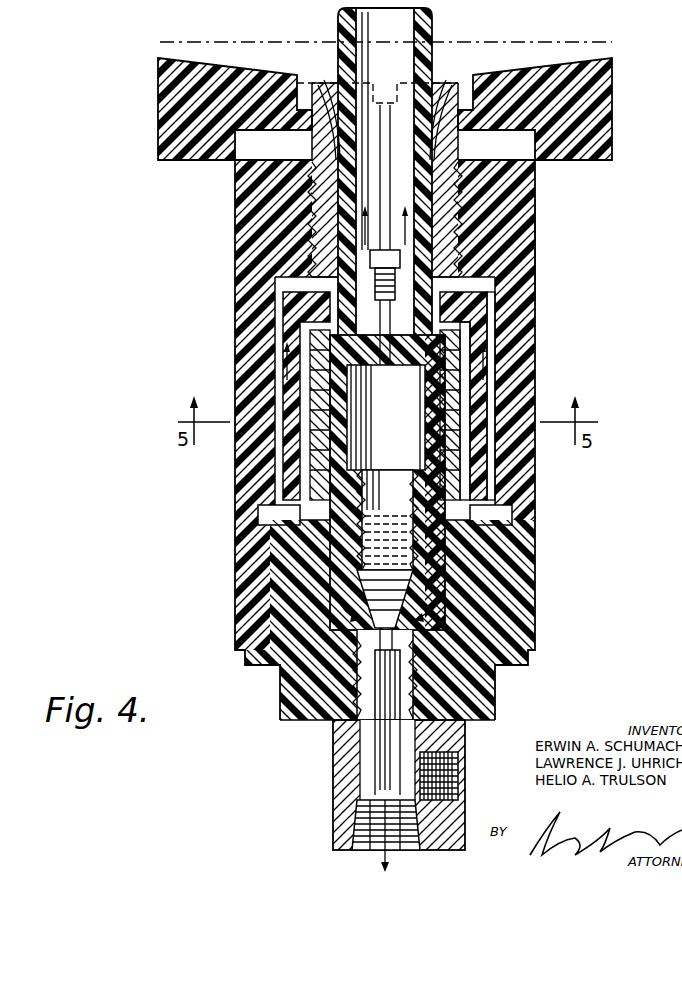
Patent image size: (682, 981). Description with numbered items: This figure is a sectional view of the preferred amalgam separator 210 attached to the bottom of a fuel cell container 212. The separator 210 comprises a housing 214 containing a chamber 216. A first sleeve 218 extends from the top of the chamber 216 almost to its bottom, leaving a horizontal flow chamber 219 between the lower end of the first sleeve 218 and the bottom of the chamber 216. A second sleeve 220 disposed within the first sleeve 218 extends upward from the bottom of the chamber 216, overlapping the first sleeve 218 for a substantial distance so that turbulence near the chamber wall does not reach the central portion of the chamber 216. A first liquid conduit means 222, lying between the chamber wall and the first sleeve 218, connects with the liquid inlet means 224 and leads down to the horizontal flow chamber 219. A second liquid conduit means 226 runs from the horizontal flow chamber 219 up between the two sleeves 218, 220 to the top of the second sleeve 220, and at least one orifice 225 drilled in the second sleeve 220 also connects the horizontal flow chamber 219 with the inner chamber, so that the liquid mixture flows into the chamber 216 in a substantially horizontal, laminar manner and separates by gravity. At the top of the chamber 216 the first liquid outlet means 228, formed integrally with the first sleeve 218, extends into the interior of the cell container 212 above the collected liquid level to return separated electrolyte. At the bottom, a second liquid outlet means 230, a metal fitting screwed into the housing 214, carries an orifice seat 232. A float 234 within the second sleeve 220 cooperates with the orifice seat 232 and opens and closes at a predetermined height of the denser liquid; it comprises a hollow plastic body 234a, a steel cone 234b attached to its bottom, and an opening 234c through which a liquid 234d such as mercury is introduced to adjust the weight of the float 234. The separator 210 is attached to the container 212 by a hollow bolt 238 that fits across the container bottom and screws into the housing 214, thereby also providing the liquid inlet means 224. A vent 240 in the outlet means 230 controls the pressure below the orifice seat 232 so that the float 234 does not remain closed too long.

The separator 210 is at (548, 245).
The fuel cell container 212 is at (596, 120).
The housing 214 is at (250, 258).
The chamber 216 is at (310, 333).
The first sleeve 218 is at (482, 473).
The horizontal flow chamber 219 is at (270, 518).
The second sleeve 220 is at (462, 398).
The first liquid conduit means 222 is at (285, 362).
The liquid inlet means 224 is at (352, 96).
The orifice 225 is at (470, 516).
The second liquid conduit means 226 is at (305, 455).
The first liquid outlet means 228 is at (426, 36).
The second liquid outlet means 230 is at (399, 796).
The orifice seat 232 is at (490, 688).
The float 234 is at (470, 482).
The hollow plastic body 234a is at (430, 542).
The steel cone 234b is at (430, 597).
The opening 234c is at (395, 368).
The liquid 234d is at (386, 510).
The hollow bolt 238 is at (470, 80).
The vent 240 is at (460, 768).